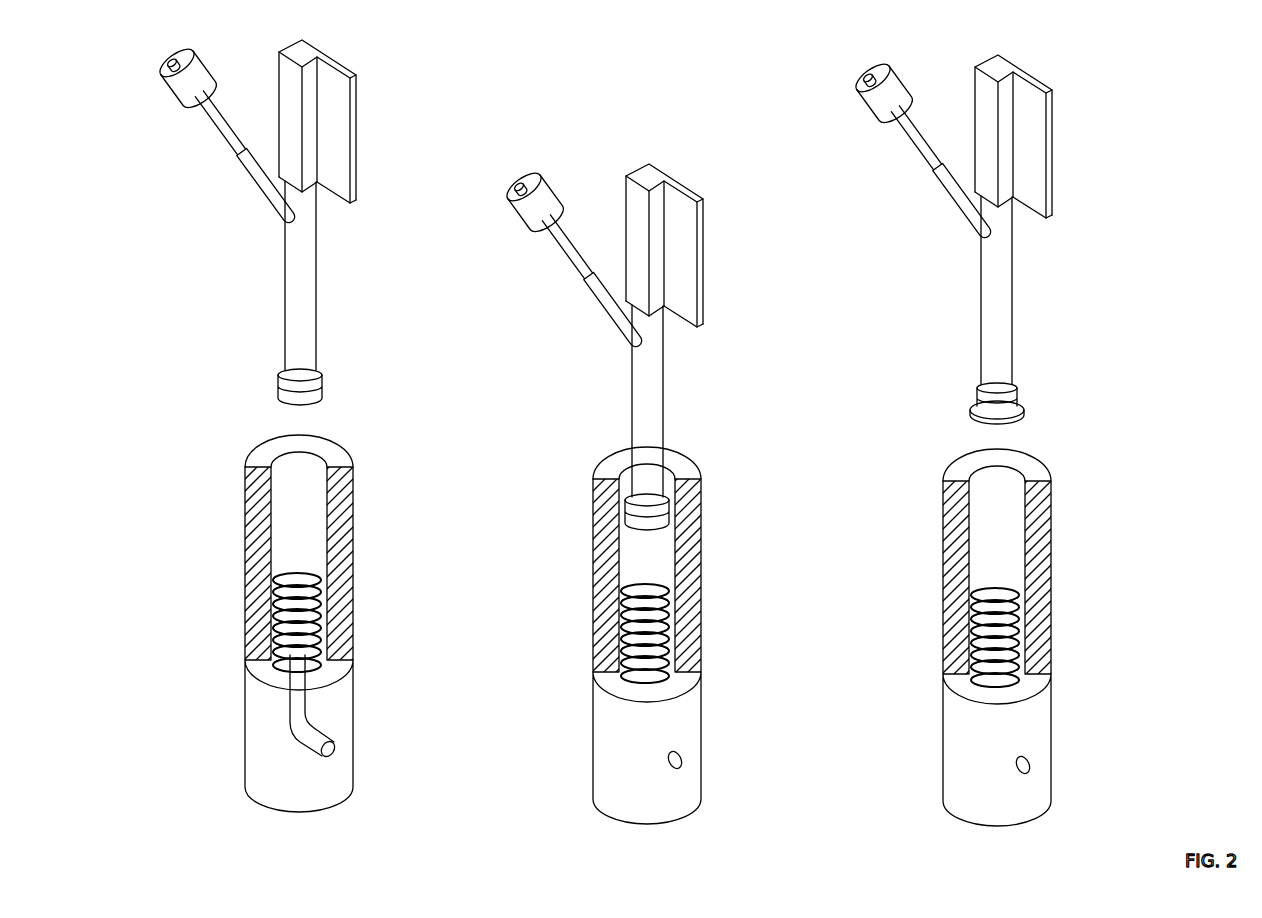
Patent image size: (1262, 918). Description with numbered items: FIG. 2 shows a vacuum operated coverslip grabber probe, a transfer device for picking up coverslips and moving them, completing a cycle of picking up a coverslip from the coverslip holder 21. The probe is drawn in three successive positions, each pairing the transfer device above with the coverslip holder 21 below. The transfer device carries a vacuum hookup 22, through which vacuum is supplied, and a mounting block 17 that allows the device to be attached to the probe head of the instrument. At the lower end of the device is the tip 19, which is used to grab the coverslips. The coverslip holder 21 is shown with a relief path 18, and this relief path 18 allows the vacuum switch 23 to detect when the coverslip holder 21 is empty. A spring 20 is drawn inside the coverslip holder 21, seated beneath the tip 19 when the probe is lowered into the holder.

The mounting block 17 is at (1057, 148).
The relief path 18 is at (333, 743).
The tip 19 is at (1020, 388).
The coil spring 20 is at (1020, 588).
The coverslip holder 21 is at (938, 700).
The vacuum hookup 22 is at (955, 205).
The vacuum switch 23 is at (552, 190).